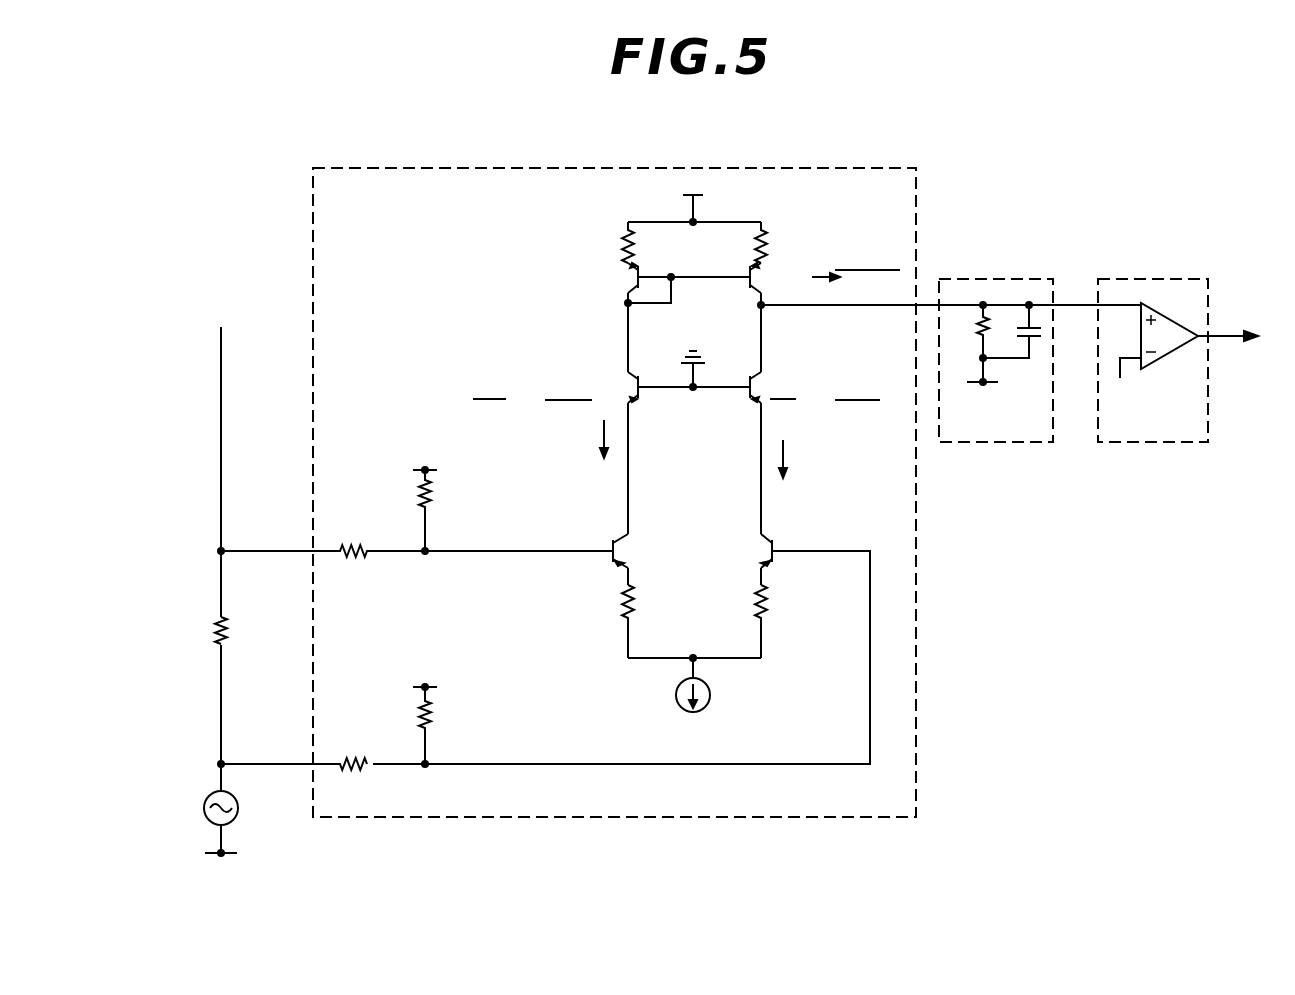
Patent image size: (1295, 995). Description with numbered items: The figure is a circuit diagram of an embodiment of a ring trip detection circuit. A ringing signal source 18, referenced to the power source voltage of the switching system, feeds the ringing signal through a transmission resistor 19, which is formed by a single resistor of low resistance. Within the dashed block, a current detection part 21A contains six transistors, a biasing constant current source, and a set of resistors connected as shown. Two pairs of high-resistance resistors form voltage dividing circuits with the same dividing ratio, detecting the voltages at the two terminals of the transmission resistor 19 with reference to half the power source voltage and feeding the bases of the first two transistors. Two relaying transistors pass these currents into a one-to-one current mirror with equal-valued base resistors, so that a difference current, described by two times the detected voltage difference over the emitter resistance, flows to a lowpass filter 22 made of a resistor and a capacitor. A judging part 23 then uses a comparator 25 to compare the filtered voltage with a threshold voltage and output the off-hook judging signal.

The current detection part 21A is at (313, 240).
The lowpass filter 22 is at (968, 278).
The judging part 23 is at (1105, 278).
The comparator 25 is at (1170, 310).
The transmission resistor 19 is at (214, 629).
The ringing signal source 18 is at (202, 805).